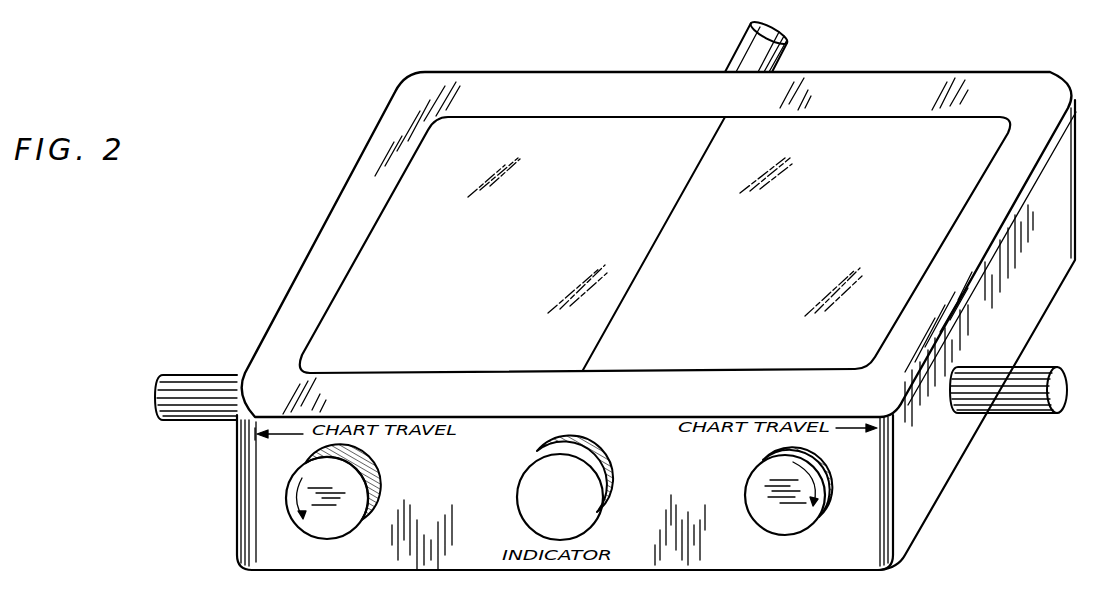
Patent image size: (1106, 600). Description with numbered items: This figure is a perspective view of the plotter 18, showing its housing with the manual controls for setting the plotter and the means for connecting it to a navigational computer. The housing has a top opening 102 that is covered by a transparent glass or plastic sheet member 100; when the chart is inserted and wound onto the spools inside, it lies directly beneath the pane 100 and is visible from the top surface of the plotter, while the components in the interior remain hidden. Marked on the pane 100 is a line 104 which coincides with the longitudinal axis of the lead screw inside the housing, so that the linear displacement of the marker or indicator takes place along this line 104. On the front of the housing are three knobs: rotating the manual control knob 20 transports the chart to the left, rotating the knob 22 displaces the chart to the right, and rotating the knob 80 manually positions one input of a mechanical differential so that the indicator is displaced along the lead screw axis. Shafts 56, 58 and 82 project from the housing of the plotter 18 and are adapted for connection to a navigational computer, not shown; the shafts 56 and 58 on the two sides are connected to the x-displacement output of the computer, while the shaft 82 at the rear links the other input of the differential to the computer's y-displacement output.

The plotter 18 is at (942, 55).
The shaft 82 is at (792, 37).
The transparent sheet member 100 is at (848, 136).
The top opening 102 is at (362, 257).
The line 104 is at (640, 272).
The shaft 56 is at (204, 392).
The shaft 58 is at (1040, 400).
The manual control knob 20 is at (342, 525).
The knob 80 is at (538, 500).
The knob 22 is at (750, 490).